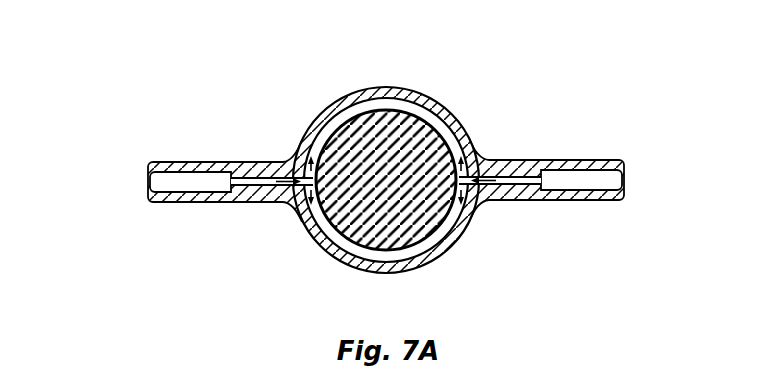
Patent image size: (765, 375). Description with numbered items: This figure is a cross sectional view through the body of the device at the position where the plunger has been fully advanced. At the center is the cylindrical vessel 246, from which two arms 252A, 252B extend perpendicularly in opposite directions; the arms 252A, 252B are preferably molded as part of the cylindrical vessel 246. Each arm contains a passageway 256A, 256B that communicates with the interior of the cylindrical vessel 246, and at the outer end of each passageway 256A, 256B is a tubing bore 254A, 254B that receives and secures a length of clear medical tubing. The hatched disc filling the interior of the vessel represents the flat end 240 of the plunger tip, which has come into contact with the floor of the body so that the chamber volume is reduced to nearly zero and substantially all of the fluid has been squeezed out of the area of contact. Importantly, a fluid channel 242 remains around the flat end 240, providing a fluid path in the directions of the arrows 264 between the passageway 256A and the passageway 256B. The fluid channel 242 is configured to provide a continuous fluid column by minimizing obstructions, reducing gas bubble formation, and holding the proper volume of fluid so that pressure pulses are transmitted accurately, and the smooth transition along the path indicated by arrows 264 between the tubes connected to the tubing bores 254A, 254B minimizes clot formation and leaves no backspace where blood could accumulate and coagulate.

The flat end 240 is at (397, 143).
The fluid channel 242 is at (344, 119).
The cylindrical vessel 246 is at (451, 109).
The arm 252A is at (248, 161).
The arm 252B is at (522, 201).
The tubing bore 254A is at (166, 188).
The tubing bore 254B is at (604, 185).
The passageway 256A is at (262, 191).
The passageway 256B is at (525, 160).
The arrows 264 is at (298, 163).